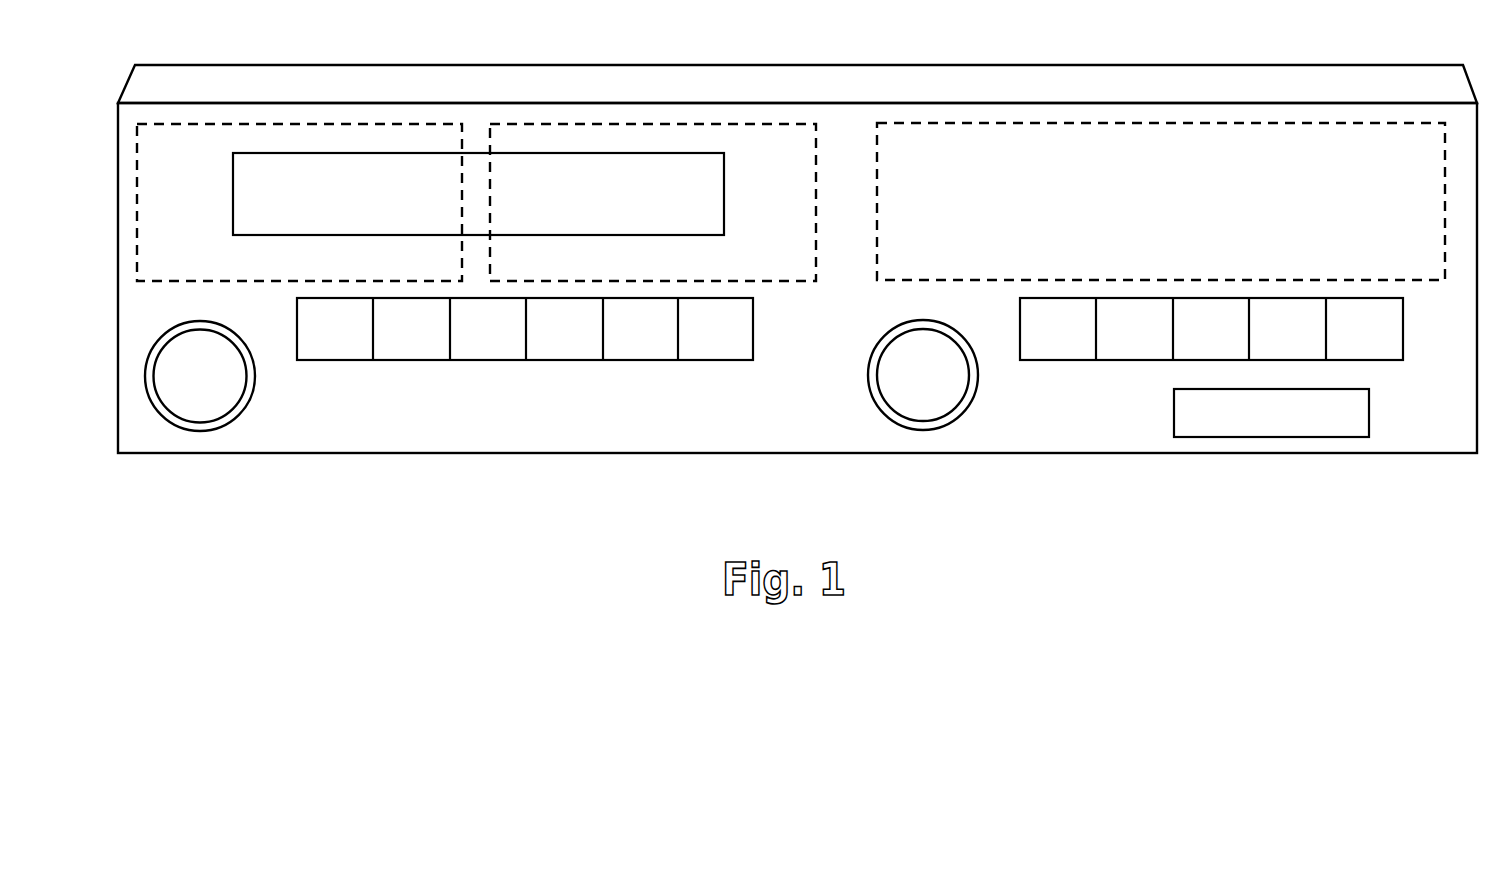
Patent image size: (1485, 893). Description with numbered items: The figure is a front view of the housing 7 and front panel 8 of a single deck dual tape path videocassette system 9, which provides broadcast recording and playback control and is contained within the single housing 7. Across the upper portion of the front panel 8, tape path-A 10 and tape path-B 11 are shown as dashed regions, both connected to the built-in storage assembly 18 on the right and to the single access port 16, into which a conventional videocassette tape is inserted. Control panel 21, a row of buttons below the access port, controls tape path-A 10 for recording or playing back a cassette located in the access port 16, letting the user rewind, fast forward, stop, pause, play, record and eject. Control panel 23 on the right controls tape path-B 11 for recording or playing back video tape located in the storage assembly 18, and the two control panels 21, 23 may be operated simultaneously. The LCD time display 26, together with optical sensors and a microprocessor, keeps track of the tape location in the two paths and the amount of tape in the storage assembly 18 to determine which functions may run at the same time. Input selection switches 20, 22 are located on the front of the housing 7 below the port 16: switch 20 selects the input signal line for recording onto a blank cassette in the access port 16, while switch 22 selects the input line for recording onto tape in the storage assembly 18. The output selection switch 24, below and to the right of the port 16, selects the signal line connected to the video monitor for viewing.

The housing 7 is at (797, 272).
The front panel 8 is at (608, 419).
The single deck dual tape path videocassette system 9 is at (765, 65).
The tape path-A 10 is at (194, 123).
The tape path-B 11 is at (651, 122).
The single access port 16 is at (469, 153).
The built-in storage assembly 18 is at (1141, 122).
The input selection switch 20 is at (229, 374).
The control panel 21 is at (342, 362).
The input selection switch 22 is at (232, 410).
The control panel 23 is at (1060, 362).
The output selection switch 24 is at (923, 430).
The LCD time display 26 is at (1280, 437).